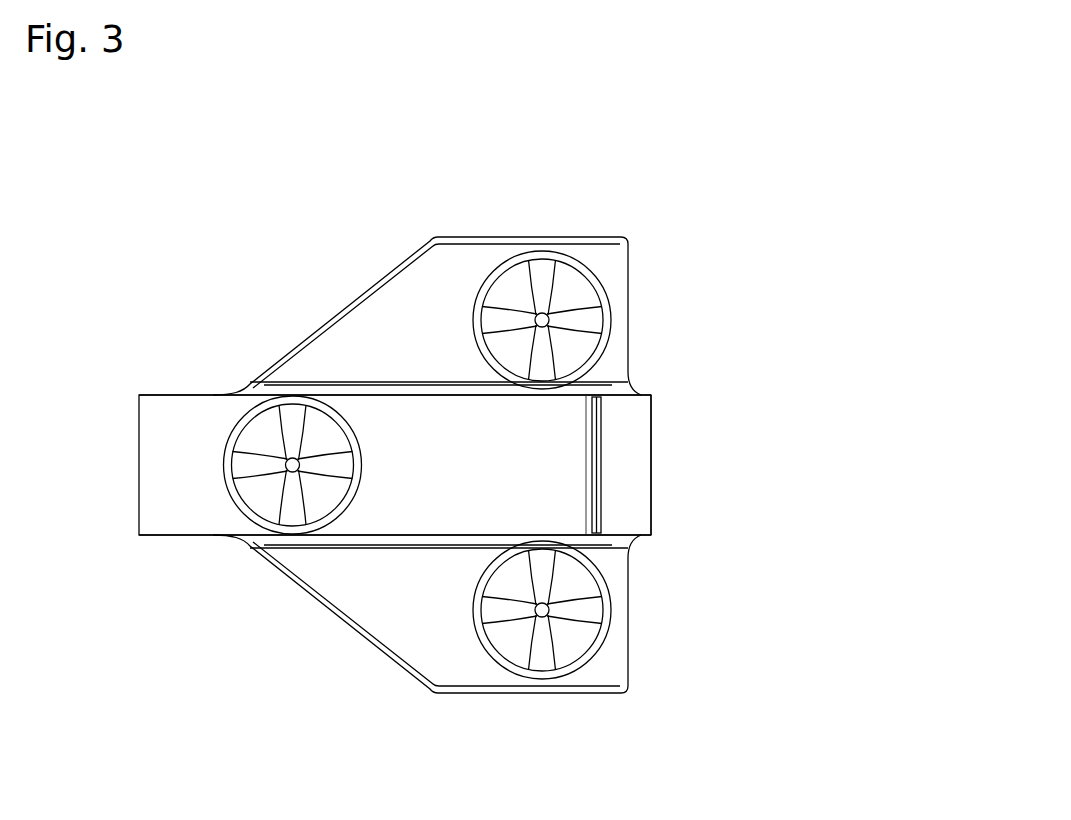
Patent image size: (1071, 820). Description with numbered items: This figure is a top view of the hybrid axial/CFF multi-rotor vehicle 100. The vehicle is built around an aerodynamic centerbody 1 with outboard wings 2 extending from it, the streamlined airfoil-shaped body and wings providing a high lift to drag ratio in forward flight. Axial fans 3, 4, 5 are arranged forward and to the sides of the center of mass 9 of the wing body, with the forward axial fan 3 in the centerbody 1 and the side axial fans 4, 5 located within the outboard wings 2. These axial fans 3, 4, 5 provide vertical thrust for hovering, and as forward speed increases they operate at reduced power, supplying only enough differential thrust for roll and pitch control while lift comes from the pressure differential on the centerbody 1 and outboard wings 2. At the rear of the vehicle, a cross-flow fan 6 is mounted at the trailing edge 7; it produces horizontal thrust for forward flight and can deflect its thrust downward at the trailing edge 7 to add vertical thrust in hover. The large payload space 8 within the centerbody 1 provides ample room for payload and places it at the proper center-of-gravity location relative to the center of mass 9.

The hybrid axial/CFF multi-rotor vehicle 100 is at (694, 183).
The aerodynamic centerbody 1 is at (160, 460).
The outboard wings 2 is at (328, 355).
The axial fan 3 is at (292, 513).
The axial fan 4 is at (542, 275).
The axial fan 5 is at (540, 657).
The cross-flow fan 6 is at (597, 489).
The trailing edge 7 is at (652, 440).
The payload space 8 is at (445, 465).
The center of mass 9 is at (407, 465).